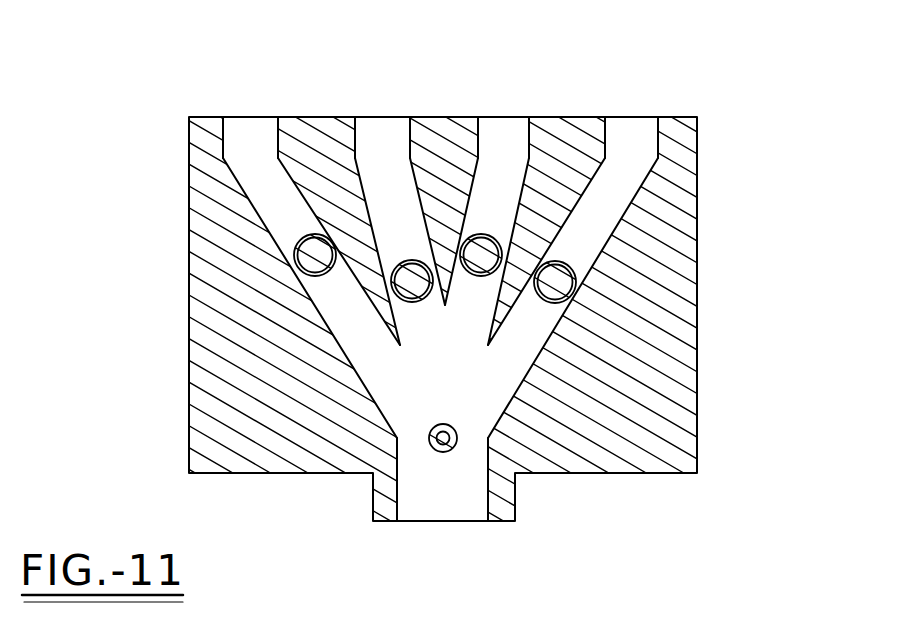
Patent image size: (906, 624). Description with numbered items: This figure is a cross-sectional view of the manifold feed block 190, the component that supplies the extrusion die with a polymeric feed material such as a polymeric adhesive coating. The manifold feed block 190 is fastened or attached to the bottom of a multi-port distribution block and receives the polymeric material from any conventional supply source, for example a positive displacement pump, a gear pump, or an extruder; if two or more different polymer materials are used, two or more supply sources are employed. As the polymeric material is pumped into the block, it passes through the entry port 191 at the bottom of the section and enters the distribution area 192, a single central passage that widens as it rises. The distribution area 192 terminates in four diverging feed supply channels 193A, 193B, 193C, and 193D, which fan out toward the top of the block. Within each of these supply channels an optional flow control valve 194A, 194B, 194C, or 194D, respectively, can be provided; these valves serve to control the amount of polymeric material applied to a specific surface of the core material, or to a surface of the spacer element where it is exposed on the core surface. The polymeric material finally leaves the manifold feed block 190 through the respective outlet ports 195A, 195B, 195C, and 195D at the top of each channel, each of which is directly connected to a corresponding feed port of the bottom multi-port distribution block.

The manifold feed block 190 is at (188, 392).
The entry port 191 is at (420, 505).
The distribution area 192 is at (458, 397).
The feed supply channel 193A is at (260, 188).
The feed supply channel 193B is at (380, 168).
The feed supply channel 193C is at (512, 170).
The feed supply channel 193D is at (620, 207).
The flow control valve 194A is at (307, 252).
The flow control valve 194B is at (405, 280).
The flow control valve 194C is at (487, 253).
The flow control valve 194D is at (562, 282).
The outlet port 195A is at (230, 134).
The outlet port 195B is at (357, 133).
The outlet port 195C is at (528, 135).
The outlet port 195D is at (655, 128).